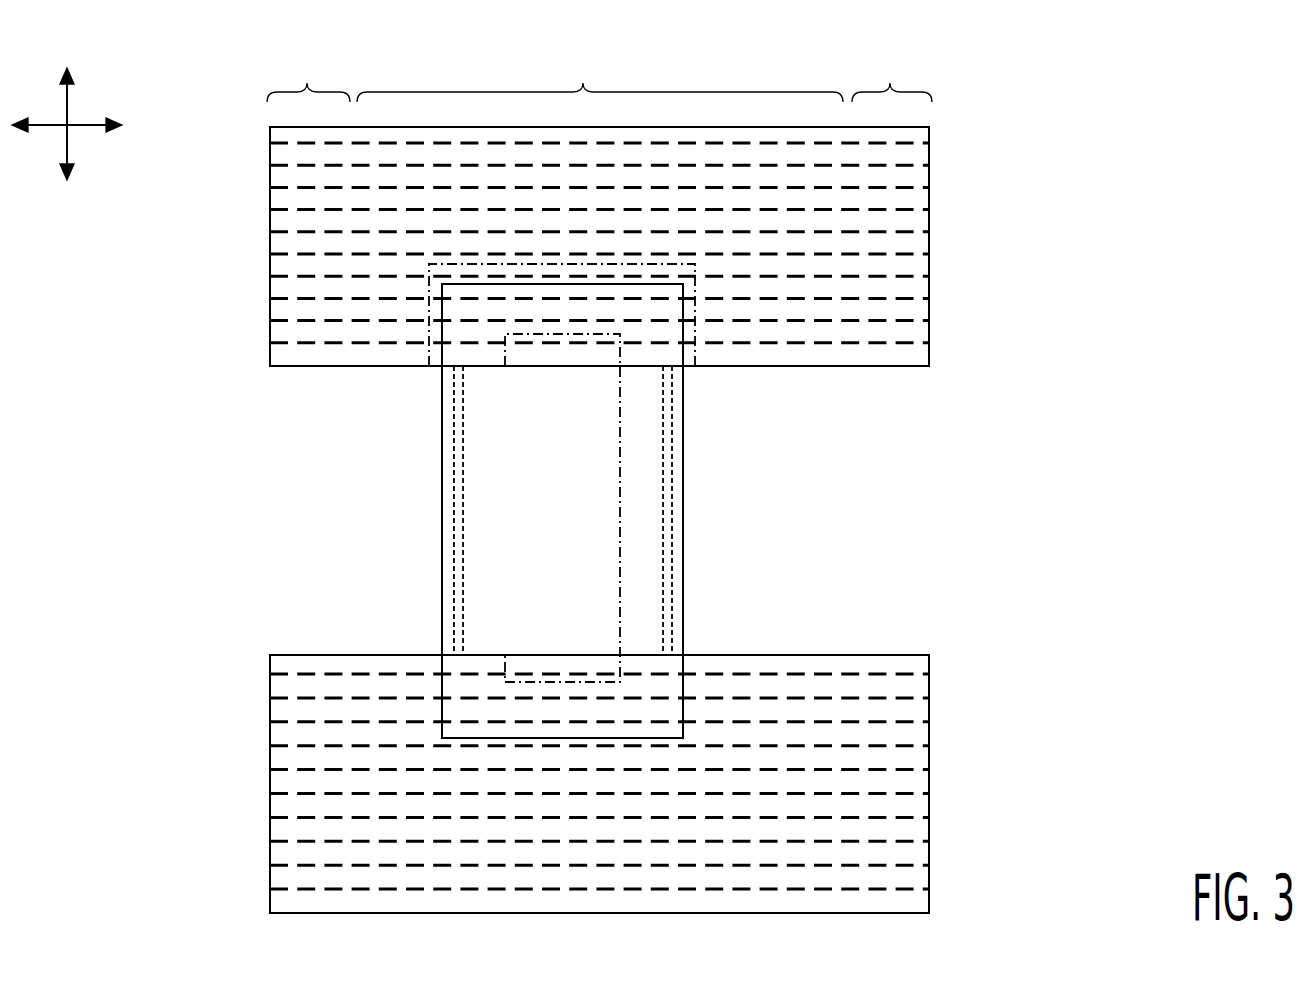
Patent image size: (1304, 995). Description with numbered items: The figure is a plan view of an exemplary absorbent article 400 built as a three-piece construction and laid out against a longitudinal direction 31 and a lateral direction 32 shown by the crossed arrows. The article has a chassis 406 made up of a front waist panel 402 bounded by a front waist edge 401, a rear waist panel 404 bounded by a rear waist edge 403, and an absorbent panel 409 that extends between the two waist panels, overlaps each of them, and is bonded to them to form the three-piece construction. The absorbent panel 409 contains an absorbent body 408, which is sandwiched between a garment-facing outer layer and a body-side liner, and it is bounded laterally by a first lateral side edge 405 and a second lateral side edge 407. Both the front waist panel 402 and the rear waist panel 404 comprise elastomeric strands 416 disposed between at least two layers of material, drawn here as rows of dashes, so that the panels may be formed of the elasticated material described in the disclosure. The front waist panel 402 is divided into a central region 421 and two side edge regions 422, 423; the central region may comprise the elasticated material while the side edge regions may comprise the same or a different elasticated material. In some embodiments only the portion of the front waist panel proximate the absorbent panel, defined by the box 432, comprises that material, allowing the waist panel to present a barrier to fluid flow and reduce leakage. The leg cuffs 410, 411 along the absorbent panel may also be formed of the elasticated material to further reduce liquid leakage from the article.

The longitudinal direction 31 is at (67, 108).
The lateral direction 32 is at (45, 125).
The absorbent article 400 is at (1146, 168).
The front waist edge 401 is at (918, 125).
The front waist panel 402 is at (929, 244).
The rear waist edge 403 is at (882, 913).
The rear waist panel 404 is at (929, 807).
The first lateral side edge 405 is at (683, 603).
The chassis 406 is at (1022, 483).
The second lateral side edge 407 is at (442, 492).
The absorbent body 408 is at (620, 442).
The absorbent panel 409 is at (683, 502).
The leg cuff 410 is at (683, 573).
The leg cuff 411 is at (440, 575).
The elastomeric strands 416 is at (905, 299).
The central region 421 is at (600, 77).
The side edge region 422 is at (308, 77).
The side edge region 423 is at (892, 77).
The box 432 is at (697, 308).